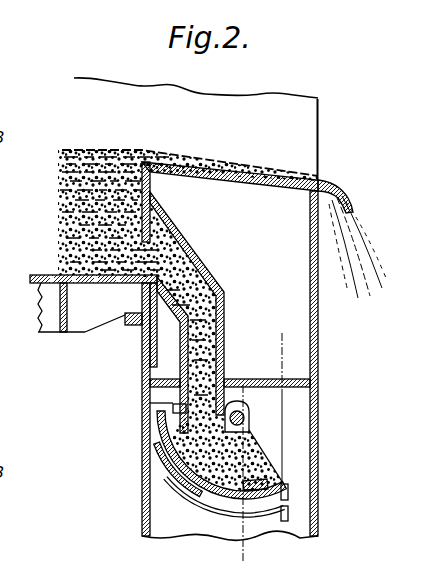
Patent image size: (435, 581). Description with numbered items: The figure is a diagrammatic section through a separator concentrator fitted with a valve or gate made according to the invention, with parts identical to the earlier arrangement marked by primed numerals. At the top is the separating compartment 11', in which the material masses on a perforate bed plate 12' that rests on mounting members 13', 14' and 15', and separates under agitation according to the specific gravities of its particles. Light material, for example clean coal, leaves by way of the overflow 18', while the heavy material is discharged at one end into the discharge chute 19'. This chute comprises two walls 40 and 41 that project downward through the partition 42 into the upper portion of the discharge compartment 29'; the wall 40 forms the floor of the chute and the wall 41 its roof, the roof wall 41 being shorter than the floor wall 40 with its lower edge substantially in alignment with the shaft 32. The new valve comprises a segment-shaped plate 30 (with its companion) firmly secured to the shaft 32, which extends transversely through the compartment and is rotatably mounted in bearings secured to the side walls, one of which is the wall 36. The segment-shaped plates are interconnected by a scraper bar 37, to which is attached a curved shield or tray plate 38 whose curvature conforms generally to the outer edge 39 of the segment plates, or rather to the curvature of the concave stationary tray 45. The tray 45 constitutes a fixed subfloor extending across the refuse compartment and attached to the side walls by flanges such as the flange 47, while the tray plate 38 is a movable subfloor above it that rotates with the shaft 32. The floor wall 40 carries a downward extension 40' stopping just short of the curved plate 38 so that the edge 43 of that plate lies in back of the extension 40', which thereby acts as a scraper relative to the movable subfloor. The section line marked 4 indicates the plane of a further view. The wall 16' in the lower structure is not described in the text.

The separating compartment 11' is at (188, 199).
The perforate bed plate 12' is at (78, 293).
The mounting member 13' is at (53, 322).
The mounting member 14' is at (79, 328).
The mounting member 15' is at (113, 345).
The outer wall 16' is at (118, 409).
The overflow 18' is at (352, 217).
The discharge chute 19' is at (196, 330).
The discharge compartment 29' is at (230, 552).
The segment-shaped plate 30 is at (250, 432).
The shaft 32 is at (241, 406).
The wall 36 is at (295, 430).
The scraper bar 37 is at (190, 492).
The curved shield or tray plate 38 is at (167, 466).
The outer edge 39 is at (157, 428).
The wall 40 is at (197, 310).
The extension 40' is at (189, 452).
The wall 41 is at (225, 320).
The partition 42 is at (298, 381).
The edge 43 is at (172, 408).
The stationary tray 45 is at (288, 492).
The flange 47 is at (288, 512).
The section line 4 is at (230, 553).